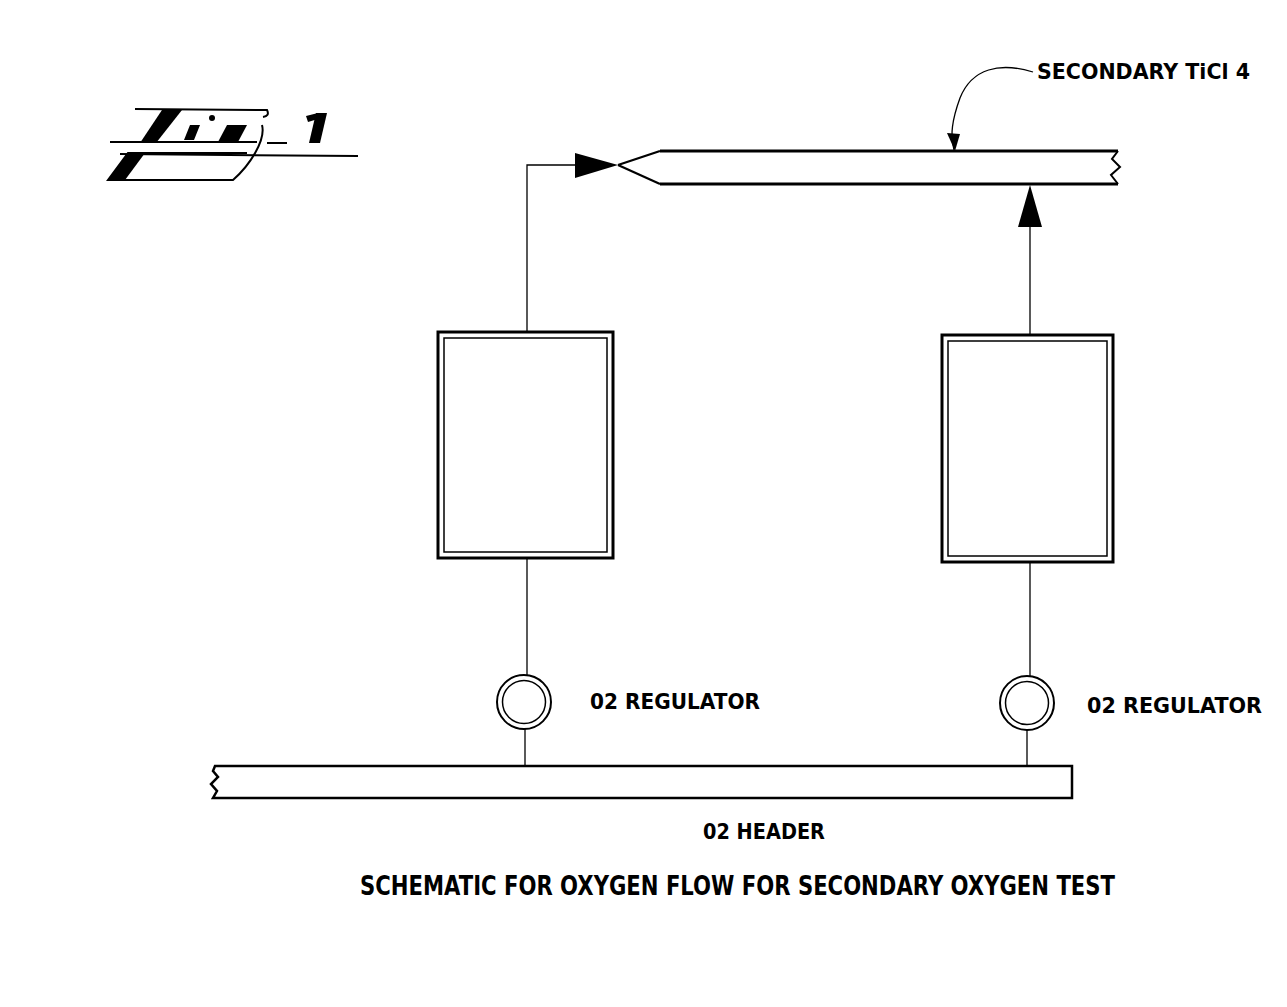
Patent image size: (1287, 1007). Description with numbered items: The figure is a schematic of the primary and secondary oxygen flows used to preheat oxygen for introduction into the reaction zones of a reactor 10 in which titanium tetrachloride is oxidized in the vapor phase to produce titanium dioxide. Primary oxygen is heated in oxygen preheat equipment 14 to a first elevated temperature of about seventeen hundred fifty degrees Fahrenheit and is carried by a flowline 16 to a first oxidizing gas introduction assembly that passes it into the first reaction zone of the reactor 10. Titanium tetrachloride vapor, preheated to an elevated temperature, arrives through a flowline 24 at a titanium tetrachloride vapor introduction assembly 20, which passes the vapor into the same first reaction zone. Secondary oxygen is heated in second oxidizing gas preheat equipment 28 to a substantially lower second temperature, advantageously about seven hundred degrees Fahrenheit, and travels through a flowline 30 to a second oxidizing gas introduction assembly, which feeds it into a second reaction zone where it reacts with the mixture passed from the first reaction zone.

The reactor 10 is at (657, 187).
The oxygen preheat equipment 14 is at (438, 440).
The flowline 16 is at (527, 268).
The titanium tetrachloride vapor introduction assembly 20 is at (632, 138).
The flowline 24 is at (619, 162).
The second oxidizing gas preheat equipment 28 is at (1113, 460).
The flowline 30 is at (1032, 277).